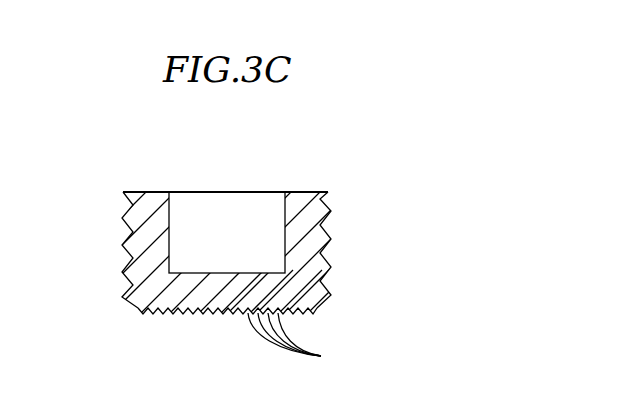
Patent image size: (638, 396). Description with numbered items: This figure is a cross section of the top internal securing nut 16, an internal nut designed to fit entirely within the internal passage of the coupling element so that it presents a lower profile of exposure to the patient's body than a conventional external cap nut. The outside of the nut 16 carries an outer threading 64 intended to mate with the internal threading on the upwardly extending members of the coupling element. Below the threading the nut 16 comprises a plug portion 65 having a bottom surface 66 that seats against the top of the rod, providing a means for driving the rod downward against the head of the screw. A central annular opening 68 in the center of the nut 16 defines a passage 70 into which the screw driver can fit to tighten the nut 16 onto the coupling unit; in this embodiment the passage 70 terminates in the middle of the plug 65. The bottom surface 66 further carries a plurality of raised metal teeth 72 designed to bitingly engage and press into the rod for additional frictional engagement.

The top internal securing nut 16 is at (398, 84).
The outer threading 64 is at (331, 247).
The plug portion 65 is at (190, 293).
The bottom surface 66 is at (178, 312).
The central annular opening 68 is at (207, 192).
The passage 70 is at (237, 232).
The raised metal teeth 72 is at (304, 343).